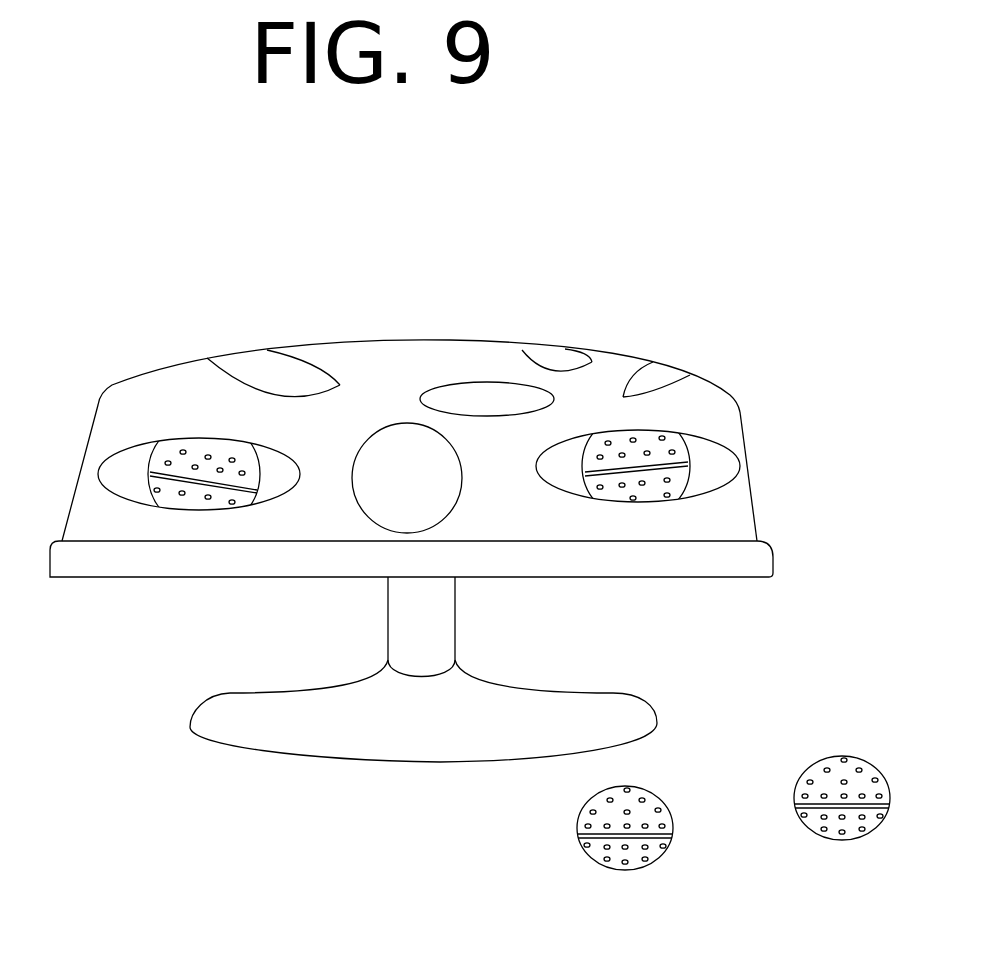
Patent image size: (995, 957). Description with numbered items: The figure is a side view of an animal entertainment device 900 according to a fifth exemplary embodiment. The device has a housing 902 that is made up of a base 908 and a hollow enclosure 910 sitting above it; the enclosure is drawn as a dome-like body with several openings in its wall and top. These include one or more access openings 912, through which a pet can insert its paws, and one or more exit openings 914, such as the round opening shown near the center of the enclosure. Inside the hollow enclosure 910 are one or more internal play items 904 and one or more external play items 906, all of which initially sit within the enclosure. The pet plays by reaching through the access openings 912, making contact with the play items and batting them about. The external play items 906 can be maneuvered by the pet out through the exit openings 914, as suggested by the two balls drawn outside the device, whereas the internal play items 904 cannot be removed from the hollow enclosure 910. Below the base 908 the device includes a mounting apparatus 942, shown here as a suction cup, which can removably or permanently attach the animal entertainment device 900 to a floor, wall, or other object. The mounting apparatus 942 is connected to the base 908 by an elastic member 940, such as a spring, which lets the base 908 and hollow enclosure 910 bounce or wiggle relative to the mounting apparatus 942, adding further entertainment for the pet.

The animal entertainment device 900 is at (571, 225).
The housing 902 is at (747, 325).
The internal play items 904 is at (628, 447).
The external play items 906 is at (822, 782).
The base 908 is at (552, 560).
The hollow enclosure 910 is at (705, 510).
The access openings 912 is at (233, 357).
The exit openings 914 is at (367, 493).
The elastic member 940 is at (385, 613).
The mounting apparatus 942 is at (345, 762).